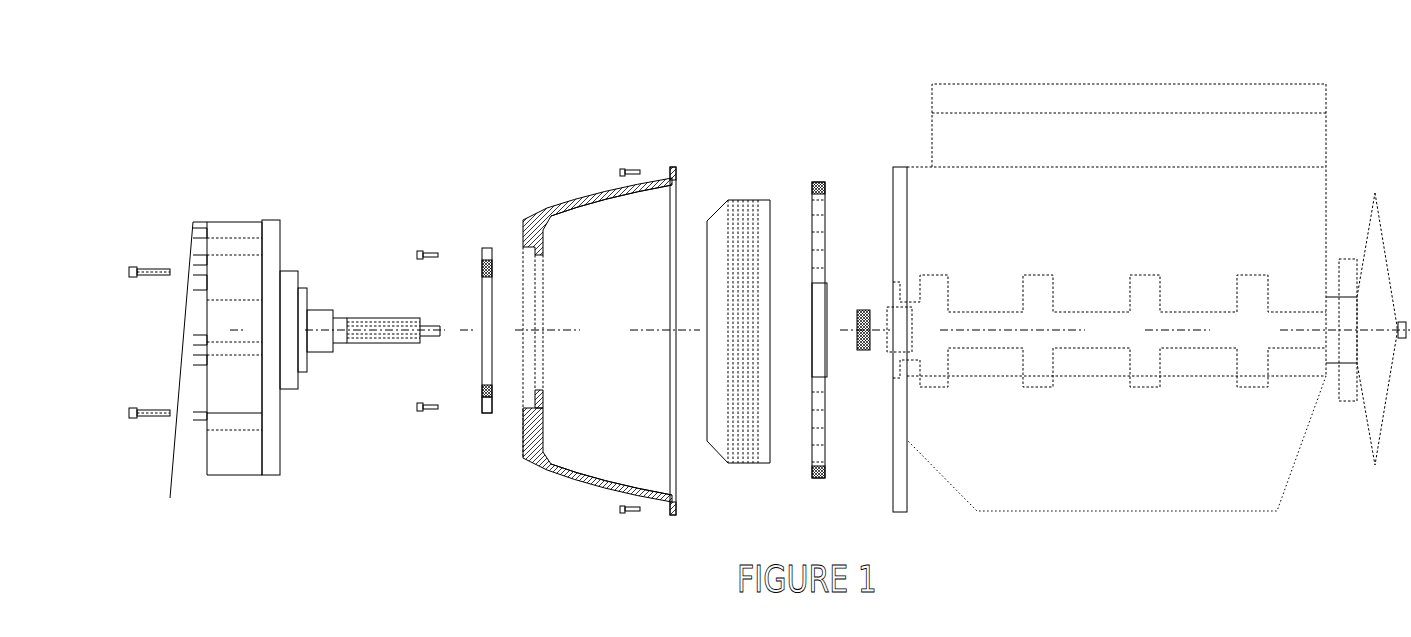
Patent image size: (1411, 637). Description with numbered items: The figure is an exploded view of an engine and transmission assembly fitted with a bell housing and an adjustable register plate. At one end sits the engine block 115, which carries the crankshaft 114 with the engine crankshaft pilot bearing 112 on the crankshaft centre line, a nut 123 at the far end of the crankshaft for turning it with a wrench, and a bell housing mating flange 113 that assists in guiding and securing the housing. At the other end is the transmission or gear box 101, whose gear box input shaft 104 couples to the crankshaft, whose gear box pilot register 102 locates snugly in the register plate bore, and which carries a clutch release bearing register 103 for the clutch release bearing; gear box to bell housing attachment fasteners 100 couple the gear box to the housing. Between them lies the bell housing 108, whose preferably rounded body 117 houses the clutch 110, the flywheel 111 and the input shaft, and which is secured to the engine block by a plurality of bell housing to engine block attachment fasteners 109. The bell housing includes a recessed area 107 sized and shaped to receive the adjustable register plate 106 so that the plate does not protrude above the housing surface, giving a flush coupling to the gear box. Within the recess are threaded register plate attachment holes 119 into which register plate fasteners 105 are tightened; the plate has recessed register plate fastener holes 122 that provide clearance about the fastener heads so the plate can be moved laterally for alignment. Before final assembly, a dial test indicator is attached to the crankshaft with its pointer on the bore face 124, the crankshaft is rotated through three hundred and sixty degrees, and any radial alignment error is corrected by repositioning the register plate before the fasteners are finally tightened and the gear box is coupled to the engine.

The gear box to bell housing attachment fasteners 100 is at (142, 268).
The gear box 101 is at (226, 222).
The gear box pilot register 102 is at (285, 268).
The clutch release bearing register 103 is at (320, 310).
The gear box input shaft 104 is at (372, 317).
The register plate fastener 105 is at (420, 252).
The adjustable register plate 106 is at (490, 250).
The recessed area 107 is at (532, 218).
The bell housing 108 is at (606, 183).
The bell housing to engine block attachment fasteners 109 is at (630, 168).
The clutch 110 is at (732, 200).
The flywheel 111 is at (815, 182).
The engine crankshaft pilot bearing 112 is at (863, 310).
The bell housing mating flange 113 is at (898, 167).
The crankshaft 114 is at (935, 293).
The engine block 115 is at (993, 253).
The body 117 is at (554, 477).
The register plate attachment holes 119 is at (547, 218).
The register plate fastener holes 122 is at (487, 250).
The nut 123 is at (1401, 321).
The bore face 124 is at (483, 397).